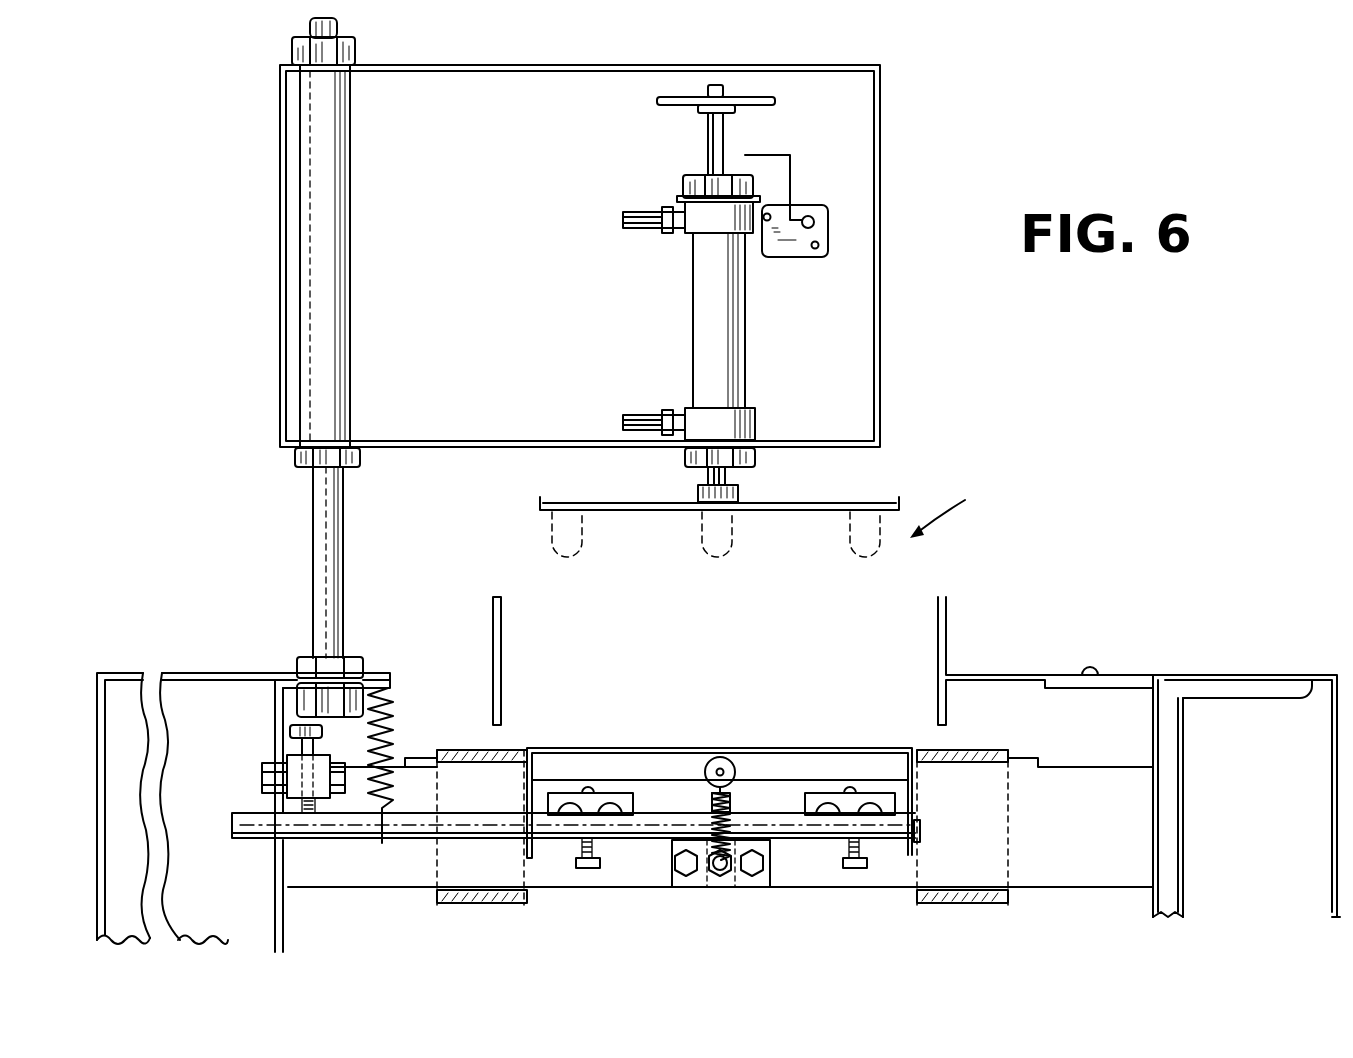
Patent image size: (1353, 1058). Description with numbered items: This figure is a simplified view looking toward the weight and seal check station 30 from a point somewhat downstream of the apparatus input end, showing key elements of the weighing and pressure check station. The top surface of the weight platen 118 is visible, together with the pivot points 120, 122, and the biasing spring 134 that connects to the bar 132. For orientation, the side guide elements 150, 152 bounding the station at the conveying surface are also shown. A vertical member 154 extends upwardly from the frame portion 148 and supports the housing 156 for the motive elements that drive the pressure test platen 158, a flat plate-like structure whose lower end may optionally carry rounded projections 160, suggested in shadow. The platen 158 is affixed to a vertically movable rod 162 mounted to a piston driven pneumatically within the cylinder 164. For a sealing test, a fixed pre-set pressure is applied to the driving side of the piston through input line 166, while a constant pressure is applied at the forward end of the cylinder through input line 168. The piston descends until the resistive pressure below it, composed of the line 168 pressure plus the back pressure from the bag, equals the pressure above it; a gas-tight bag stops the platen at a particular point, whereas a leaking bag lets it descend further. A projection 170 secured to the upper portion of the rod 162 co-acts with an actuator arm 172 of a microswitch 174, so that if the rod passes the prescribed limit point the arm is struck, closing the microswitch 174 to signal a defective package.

The weight and seal check station 30 is at (958, 507).
The weight platen 118 is at (588, 747).
The pivot point 120 is at (585, 792).
The pivot point 122 is at (850, 790).
The bar 132 is at (415, 828).
The biasing spring 134 is at (395, 722).
The frame portion 148 is at (205, 672).
The side guide element 150 is at (492, 620).
The side guide element 152 is at (946, 628).
The vertical member 154 is at (318, 562).
The housing 156 is at (278, 243).
The pressure test platen 158 is at (638, 508).
The rounded projections 160 is at (712, 545).
The vertically movable rod 162 is at (722, 131).
The cylinder 164 is at (705, 320).
The input line 166 is at (622, 219).
The input line 168 is at (622, 416).
The projection 170 is at (775, 103).
The actuator arm 172 is at (790, 152).
The microswitch 174 is at (790, 257).